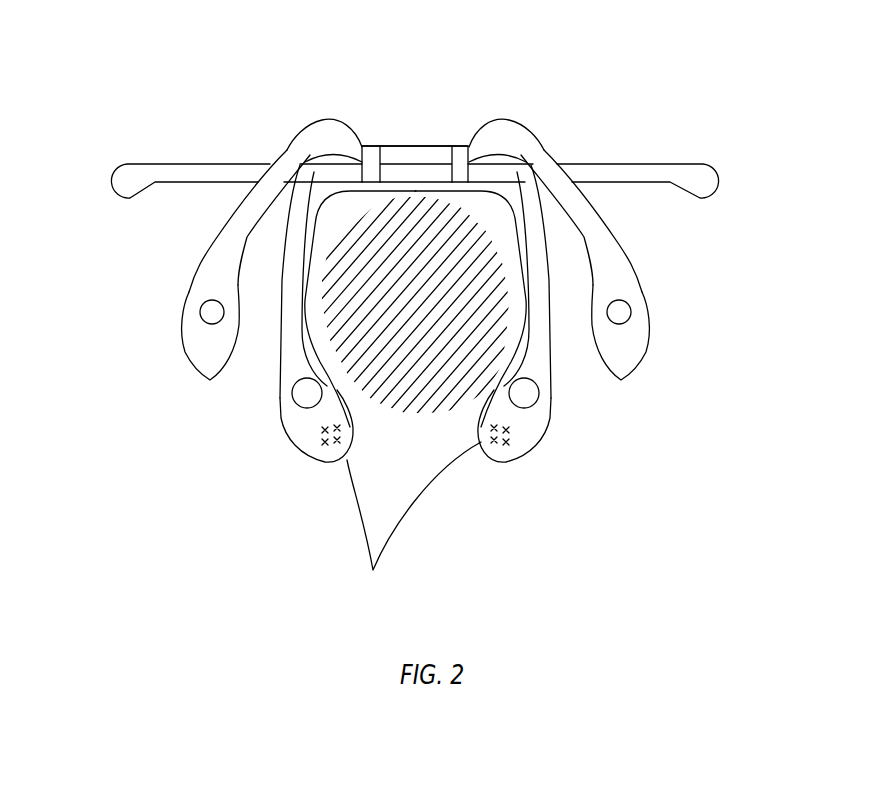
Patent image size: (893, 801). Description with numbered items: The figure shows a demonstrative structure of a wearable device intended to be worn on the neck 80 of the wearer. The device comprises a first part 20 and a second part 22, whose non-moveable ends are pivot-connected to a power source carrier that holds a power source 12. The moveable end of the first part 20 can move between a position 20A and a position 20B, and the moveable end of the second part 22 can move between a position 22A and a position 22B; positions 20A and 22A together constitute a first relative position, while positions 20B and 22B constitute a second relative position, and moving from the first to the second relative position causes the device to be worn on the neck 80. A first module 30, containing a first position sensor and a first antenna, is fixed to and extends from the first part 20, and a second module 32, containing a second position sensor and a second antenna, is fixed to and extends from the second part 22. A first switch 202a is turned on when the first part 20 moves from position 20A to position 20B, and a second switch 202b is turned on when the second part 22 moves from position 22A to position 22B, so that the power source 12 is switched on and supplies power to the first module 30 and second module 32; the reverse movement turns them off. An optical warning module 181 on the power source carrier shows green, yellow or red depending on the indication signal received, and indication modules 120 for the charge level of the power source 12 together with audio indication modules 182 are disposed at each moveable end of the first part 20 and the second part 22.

The power source 12 is at (405, 168).
The optical warning module 181 is at (430, 147).
The audio indication module 182 is at (414, 524).
The first switch 202a is at (368, 147).
The second switch 202b is at (463, 145).
The first part 20 is at (280, 268).
The second part 22 is at (547, 267).
The position of the moveable end of the first part 20A is at (187, 350).
The position of the moveable end of the second part 22A is at (657, 330).
The position of the moveable end of the first part 20B is at (305, 452).
The position of the moveable end of the second part 22B is at (520, 457).
The indication module 120 is at (281, 416).
The first module 30 is at (113, 167).
The second module 32 is at (715, 168).
The neck 80 is at (422, 305).